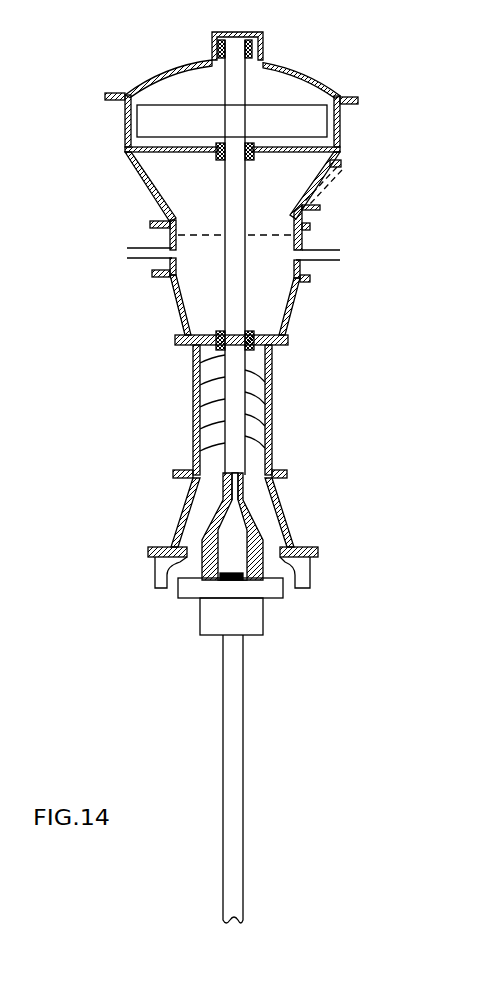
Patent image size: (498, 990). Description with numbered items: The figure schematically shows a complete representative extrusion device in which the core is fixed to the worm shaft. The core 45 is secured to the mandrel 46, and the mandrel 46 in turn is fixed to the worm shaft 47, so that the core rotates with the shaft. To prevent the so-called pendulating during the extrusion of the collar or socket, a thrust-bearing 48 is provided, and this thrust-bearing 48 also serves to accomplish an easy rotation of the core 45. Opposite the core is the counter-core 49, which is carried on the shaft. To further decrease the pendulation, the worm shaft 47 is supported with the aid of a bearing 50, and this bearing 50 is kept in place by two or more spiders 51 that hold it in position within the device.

The core 45 is at (260, 562).
The mandrel 46 is at (233, 500).
The worm shaft 47 is at (235, 305).
The thrust-bearing 48 is at (240, 583).
The counter-core 49 is at (192, 592).
The bearing 50 is at (267, 348).
The spiders 51 is at (200, 343).